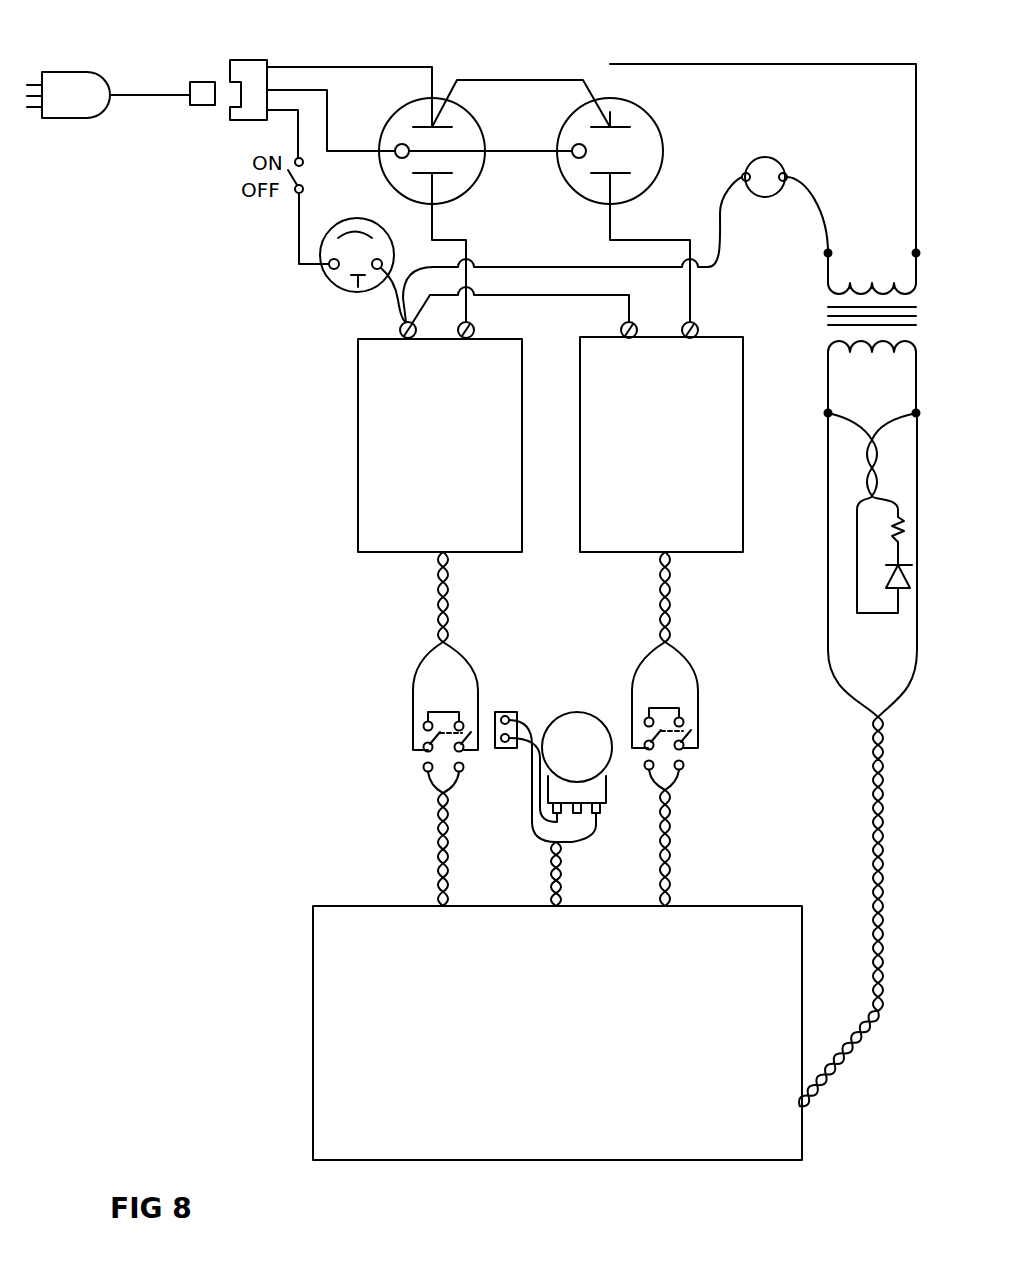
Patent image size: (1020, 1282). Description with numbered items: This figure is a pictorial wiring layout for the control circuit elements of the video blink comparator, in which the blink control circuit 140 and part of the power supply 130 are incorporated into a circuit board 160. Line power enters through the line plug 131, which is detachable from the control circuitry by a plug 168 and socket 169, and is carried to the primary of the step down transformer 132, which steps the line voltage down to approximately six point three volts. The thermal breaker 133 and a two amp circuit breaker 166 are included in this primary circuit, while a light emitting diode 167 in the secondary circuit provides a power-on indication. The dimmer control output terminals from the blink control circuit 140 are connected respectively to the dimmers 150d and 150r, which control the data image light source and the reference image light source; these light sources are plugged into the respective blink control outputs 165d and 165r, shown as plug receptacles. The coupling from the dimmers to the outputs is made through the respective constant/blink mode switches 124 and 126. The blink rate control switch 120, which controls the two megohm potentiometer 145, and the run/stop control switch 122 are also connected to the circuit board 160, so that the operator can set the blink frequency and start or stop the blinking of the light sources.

The blink rate control switch 120 is at (582, 712).
The run/stop control switch 122 is at (518, 716).
The constant/blink mode switch 124 is at (410, 761).
The constant/blink mode switch 126 is at (694, 758).
The power supply 130 is at (715, 1137).
The plug 131 is at (82, 118).
The step down transformer 132 is at (824, 318).
The thermal breaker 133 is at (335, 288).
The blink control circuit 140 is at (450, 1031).
The potentiometer 145 is at (578, 972).
The dimmer 150d is at (358, 462).
The dimmer 150r is at (743, 492).
The circuit board 160 is at (559, 1009).
The blink control output 165d is at (471, 187).
The blink control output 165r is at (660, 119).
The circuit breaker 166 is at (776, 159).
The light emitting diode 167 is at (897, 613).
The plug 168 is at (198, 82).
The socket 169 is at (248, 60).